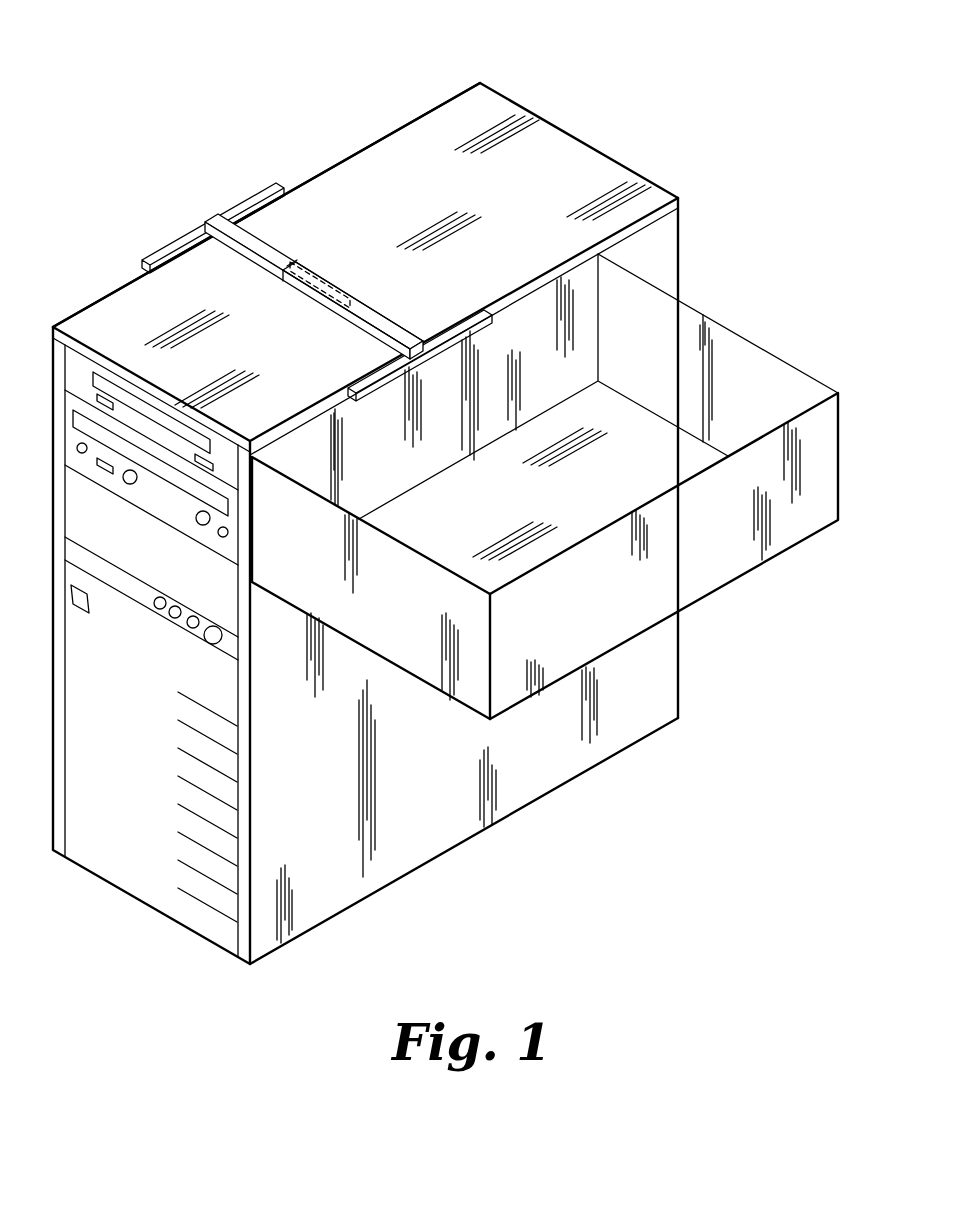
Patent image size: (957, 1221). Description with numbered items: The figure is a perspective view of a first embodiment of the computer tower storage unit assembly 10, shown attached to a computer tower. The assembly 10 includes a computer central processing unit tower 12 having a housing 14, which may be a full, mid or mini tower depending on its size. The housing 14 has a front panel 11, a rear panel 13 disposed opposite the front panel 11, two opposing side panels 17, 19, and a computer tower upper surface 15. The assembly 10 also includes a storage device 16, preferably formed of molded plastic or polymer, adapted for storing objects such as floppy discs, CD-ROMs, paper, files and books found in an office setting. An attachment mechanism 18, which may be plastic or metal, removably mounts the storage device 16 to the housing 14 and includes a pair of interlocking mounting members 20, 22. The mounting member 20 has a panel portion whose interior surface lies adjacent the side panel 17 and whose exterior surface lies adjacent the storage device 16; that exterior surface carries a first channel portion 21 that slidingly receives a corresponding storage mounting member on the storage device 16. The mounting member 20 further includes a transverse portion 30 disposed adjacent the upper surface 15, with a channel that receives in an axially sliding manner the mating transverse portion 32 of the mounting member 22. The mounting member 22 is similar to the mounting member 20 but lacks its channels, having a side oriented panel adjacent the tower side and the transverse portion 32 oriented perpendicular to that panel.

The computer tower storage unit assembly 10 is at (445, 499).
The front panel 11 is at (190, 912).
The computer central processing unit (CPU) tower 12 is at (445, 495).
The rear panel 13 is at (365, 241).
The housing 14 is at (482, 105).
The computer tower upper surface 15 is at (643, 203).
The storage device 16 is at (738, 332).
The side panel 17 is at (522, 788).
The attachment mechanism 18 is at (302, 254).
The side panel 19 is at (340, 160).
The mounting member 20 is at (375, 373).
The first channel portion 21 is at (450, 850).
The mounting member 22 is at (143, 262).
The transverse portion 30 is at (383, 307).
The transverse portion 32 is at (273, 245).